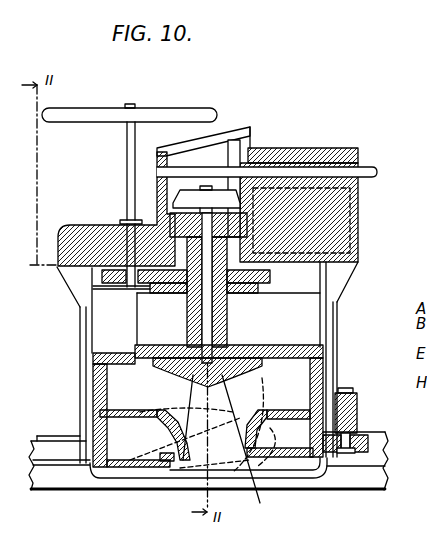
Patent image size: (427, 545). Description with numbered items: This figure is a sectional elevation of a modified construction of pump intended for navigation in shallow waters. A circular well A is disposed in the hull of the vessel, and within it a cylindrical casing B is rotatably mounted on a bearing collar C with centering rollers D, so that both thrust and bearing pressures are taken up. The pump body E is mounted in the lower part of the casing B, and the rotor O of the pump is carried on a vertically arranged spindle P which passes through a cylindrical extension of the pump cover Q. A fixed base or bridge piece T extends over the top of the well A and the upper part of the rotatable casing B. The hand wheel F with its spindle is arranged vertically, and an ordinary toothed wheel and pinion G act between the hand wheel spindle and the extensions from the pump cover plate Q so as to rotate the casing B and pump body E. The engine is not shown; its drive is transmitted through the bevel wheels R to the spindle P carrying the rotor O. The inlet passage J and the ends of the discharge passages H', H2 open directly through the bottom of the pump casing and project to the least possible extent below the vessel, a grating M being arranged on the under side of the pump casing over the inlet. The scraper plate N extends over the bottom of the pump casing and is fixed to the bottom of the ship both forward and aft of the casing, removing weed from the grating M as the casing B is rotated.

The hand wheel F is at (196, 108).
The bevel wheels R is at (208, 200).
The bearing collar C is at (168, 224).
The base T is at (359, 216).
The toothed wheel and pinion G is at (165, 285).
The spindle P is at (203, 320).
The pump cover Q is at (232, 317).
The well A is at (338, 308).
The cylindrical casing B is at (324, 323).
The pump body E is at (324, 353).
The discharge passage H' is at (240, 439).
The discharge passage H2 is at (112, 383).
The rotor O is at (160, 390).
The inlet passage J is at (300, 468).
The grating M is at (318, 468).
The centering rollers D is at (367, 430).
The scraper plate N is at (78, 490).